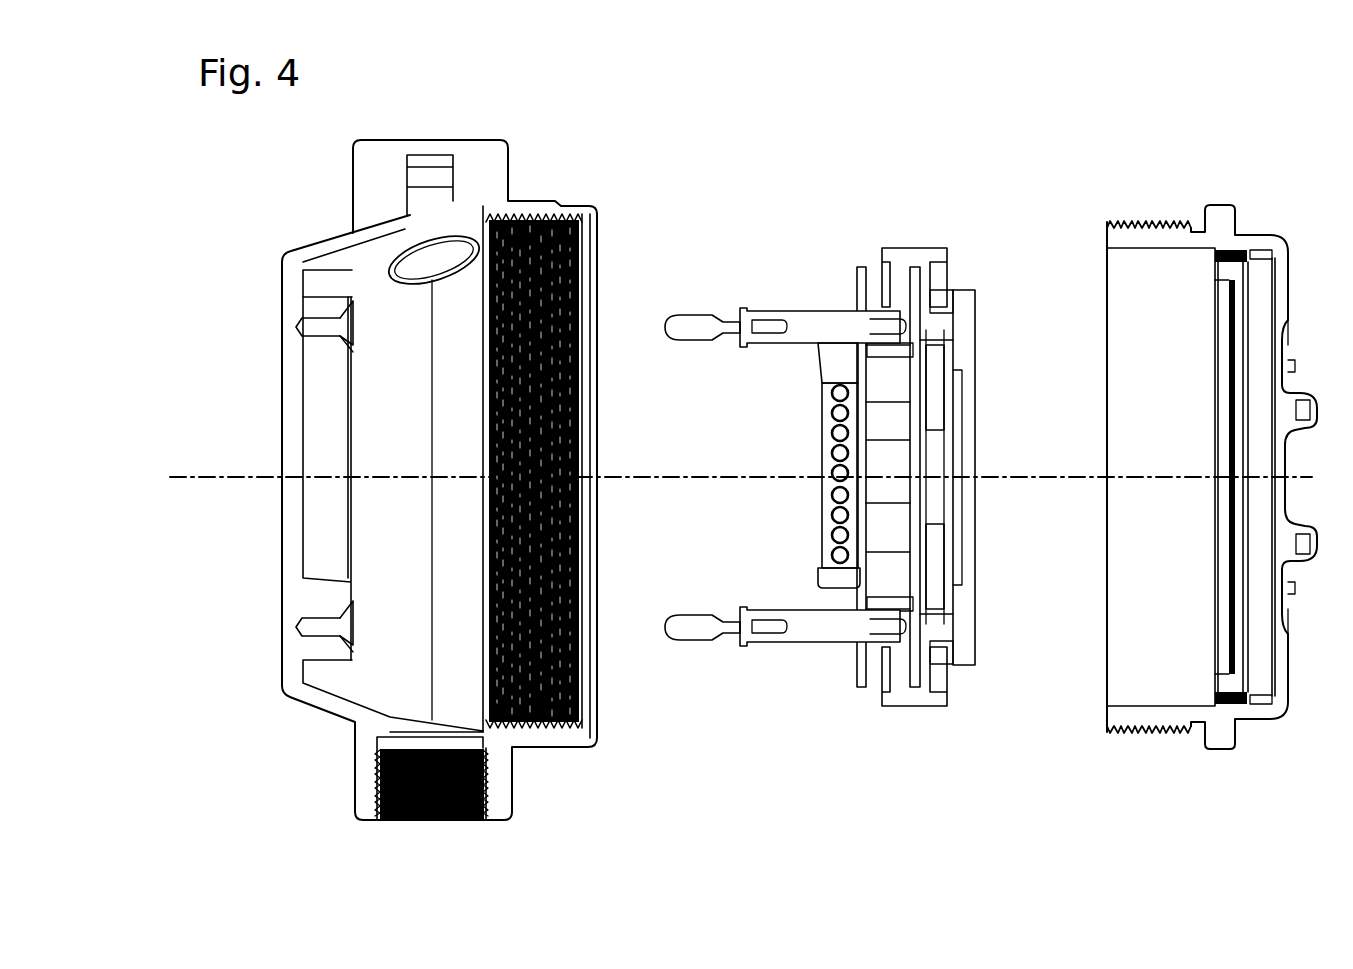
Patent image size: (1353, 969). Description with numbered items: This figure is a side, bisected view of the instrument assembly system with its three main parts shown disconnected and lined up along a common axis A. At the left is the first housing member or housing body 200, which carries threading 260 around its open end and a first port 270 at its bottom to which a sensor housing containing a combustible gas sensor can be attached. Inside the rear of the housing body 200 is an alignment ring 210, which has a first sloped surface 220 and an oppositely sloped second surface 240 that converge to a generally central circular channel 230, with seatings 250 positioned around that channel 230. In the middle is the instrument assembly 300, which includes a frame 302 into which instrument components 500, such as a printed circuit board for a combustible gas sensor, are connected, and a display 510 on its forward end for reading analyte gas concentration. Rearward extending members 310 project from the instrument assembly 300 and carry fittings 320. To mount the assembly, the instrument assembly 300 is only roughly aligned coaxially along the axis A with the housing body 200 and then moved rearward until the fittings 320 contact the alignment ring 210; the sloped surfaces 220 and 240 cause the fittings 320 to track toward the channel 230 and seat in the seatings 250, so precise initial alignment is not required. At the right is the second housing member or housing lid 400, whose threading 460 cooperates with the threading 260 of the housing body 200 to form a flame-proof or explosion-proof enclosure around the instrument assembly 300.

The housing body 200 is at (545, 163).
The alignment ring 210 is at (342, 670).
The first sloped surface 220 is at (342, 310).
The central circular channel 230 is at (347, 332).
The second sloped surface 240 is at (342, 350).
The seatings 250 is at (317, 317).
The threading 260 is at (580, 655).
The first port 270 is at (493, 802).
The instrument assembly 300 is at (977, 253).
The frame 302 is at (913, 237).
The rearward extending members 310 is at (780, 300).
The fittings 320 is at (698, 300).
The housing lid 400 is at (1203, 178).
The threading 460 is at (1163, 213).
The instrument components 500 is at (890, 567).
The display 510 is at (977, 540).
The axis A is at (218, 495).